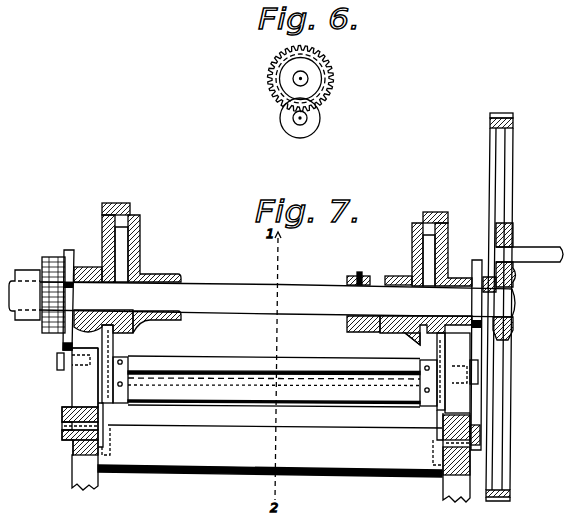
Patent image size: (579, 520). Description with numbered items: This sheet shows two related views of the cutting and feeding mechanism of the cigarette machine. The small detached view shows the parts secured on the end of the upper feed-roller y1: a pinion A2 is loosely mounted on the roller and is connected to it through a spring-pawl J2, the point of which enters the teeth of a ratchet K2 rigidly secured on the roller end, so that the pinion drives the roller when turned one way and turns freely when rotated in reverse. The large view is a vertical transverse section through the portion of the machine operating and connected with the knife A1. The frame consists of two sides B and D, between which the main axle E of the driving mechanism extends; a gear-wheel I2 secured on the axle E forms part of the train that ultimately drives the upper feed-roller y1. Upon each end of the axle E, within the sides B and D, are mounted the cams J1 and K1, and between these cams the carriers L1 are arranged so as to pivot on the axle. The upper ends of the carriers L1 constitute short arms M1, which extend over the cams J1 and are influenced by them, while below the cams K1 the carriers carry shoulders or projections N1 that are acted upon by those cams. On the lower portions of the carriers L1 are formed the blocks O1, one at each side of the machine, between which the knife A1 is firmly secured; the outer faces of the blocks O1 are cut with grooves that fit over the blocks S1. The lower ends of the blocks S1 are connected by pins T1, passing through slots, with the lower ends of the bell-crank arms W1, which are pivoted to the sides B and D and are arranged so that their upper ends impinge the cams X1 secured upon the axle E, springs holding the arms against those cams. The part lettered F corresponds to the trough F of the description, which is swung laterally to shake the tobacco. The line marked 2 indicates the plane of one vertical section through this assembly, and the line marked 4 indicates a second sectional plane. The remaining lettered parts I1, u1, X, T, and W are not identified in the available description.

In FIG. 6, the pinion A2 is at (350, 77).
In FIG. 6, the ratchet K2 is at (294, 72).
In FIG. 6, the spring-pawl J2 is at (287, 55).
In FIG. 6, the feed-roller y1 is at (338, 127).
In FIG. 7, the main axle E is at (262, 295).
In FIG. 7, the gear-wheel I2 is at (43, 331).
In FIG. 7, the cam X1 is at (66, 252).
In FIG. 7, the cam J1 is at (103, 258).
In FIG. 7, the short arm M1 is at (103, 207).
In FIG. 7, the carrier L1 is at (131, 188).
In FIG. 7, the cam K1 is at (160, 240).
In FIG. 7, the slot I1 is at (145, 262).
In FIG. 7, the shoulder N1 is at (140, 330).
In FIG. 7, the block O1 is at (97, 378).
In FIG. 7, the bell-crank arm W1 is at (60, 377).
In FIG. 7, the side B is at (71, 481).
In FIG. 7, the pin T1 is at (62, 427).
In FIG. 7, the section line 2 is at (45, 428).
In FIG. 7, the block S1 is at (109, 409).
In FIG. 7, the knife A1 is at (274, 350).
In FIG. 7, the trough F is at (270, 451).
In FIG. 7, the collar u1 is at (393, 267).
In FIG. 7, the side D is at (445, 494).
In FIG. 7, the section line 4 is at (482, 443).
In FIG. 7, the disk X is at (479, 258).
In FIG. 7, the wheel T is at (513, 131).
In FIG. 7, the pin W is at (472, 390).